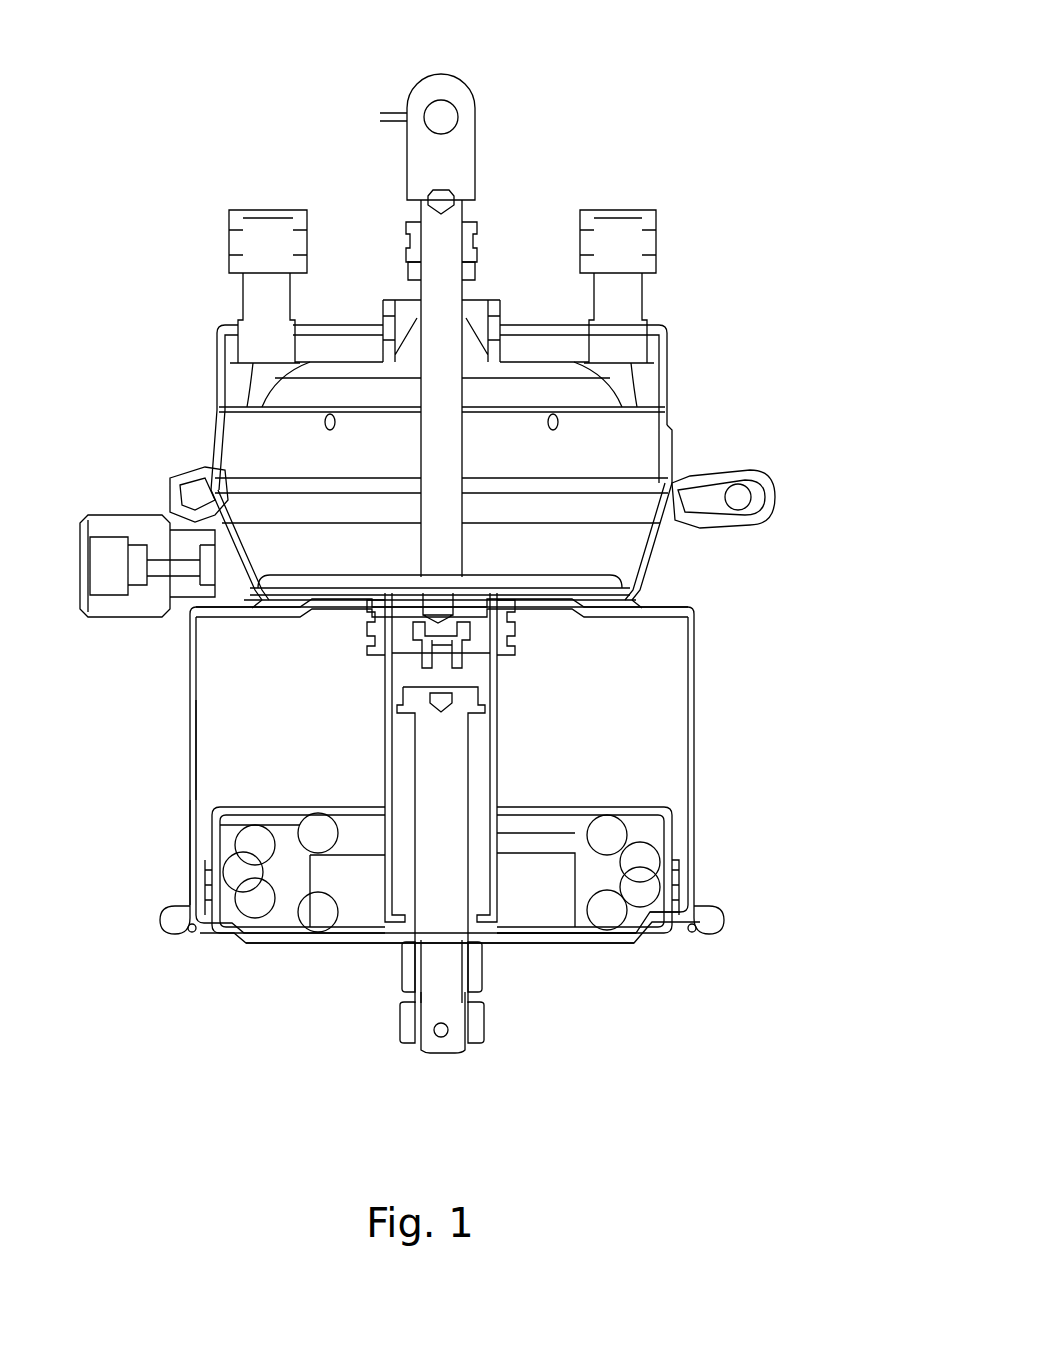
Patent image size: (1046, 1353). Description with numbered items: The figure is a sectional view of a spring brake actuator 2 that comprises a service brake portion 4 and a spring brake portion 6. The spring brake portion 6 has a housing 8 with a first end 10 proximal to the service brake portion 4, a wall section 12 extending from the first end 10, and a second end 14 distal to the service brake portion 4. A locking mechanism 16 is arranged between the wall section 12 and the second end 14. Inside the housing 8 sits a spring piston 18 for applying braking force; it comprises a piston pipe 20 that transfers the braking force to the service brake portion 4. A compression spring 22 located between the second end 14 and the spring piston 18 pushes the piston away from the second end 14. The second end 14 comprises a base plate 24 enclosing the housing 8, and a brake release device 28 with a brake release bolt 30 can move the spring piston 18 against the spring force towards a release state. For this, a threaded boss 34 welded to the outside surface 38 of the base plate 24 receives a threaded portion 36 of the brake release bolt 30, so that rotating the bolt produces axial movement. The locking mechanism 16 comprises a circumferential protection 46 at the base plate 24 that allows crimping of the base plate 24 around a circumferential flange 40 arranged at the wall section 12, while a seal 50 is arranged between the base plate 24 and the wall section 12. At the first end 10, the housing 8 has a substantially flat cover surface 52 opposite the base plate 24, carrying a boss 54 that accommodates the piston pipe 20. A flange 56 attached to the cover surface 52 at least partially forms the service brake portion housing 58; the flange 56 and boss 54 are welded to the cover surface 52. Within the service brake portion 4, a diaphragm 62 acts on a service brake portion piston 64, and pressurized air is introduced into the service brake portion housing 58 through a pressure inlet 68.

The spring brake actuator 2 is at (158, 136).
The service brake portion 4 is at (670, 141).
The spring brake portion 6 is at (104, 979).
The housing 8 is at (187, 803).
The first end 10 is at (707, 640).
The wall section 12 is at (694, 753).
The second end 14 is at (673, 960).
The locking mechanism 16 is at (737, 925).
The spring piston 18 is at (653, 813).
The piston pipe 20 is at (495, 702).
The compression spring 22 is at (313, 913).
The base plate 24 is at (530, 937).
The brake release device 28 is at (411, 1060).
The brake release bolt 30 is at (443, 843).
The threaded boss 34 is at (410, 970).
The threaded portion 36 is at (453, 966).
The outside surface 38 is at (629, 959).
The circumferential flange 40 is at (175, 937).
The circumferential protection 46 is at (172, 918).
The seal 50 is at (697, 937).
The cover surface 52 is at (677, 607).
The boss 54 is at (367, 655).
The flange 56 is at (665, 545).
The service brake portion housing 58 is at (702, 436).
The diaphragm 62 is at (330, 582).
The service brake portion piston 64 is at (207, 512).
The pressure inlet 68 is at (95, 607).